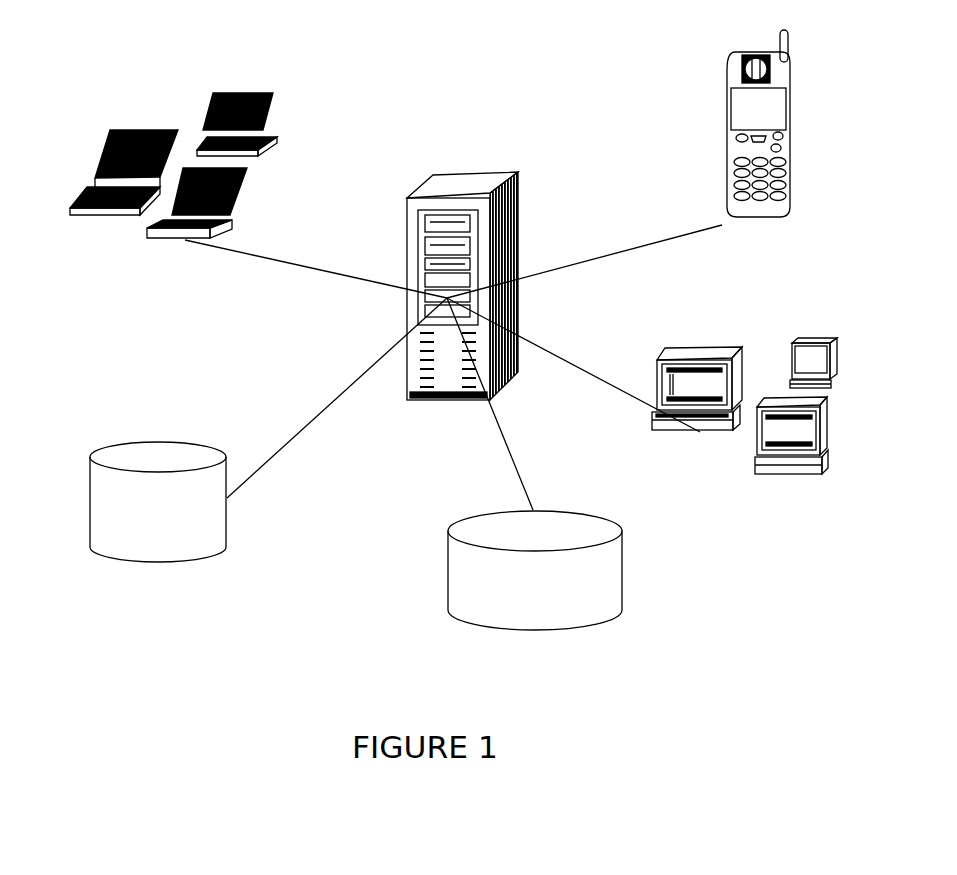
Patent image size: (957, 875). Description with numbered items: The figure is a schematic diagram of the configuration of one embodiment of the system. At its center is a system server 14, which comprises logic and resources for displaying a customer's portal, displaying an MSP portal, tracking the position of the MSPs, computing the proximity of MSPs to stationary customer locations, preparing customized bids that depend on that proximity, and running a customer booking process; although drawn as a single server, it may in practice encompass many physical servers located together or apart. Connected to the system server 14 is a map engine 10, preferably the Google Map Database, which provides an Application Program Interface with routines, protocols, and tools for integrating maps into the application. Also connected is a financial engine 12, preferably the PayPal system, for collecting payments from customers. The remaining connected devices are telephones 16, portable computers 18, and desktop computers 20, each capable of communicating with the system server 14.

The map engine 10 is at (118, 566).
The financial engine 12 is at (453, 628).
The system server 14 is at (400, 250).
The telephones 16 is at (758, 224).
The portable computers 18 is at (96, 135).
The desktop computers 20 is at (719, 454).